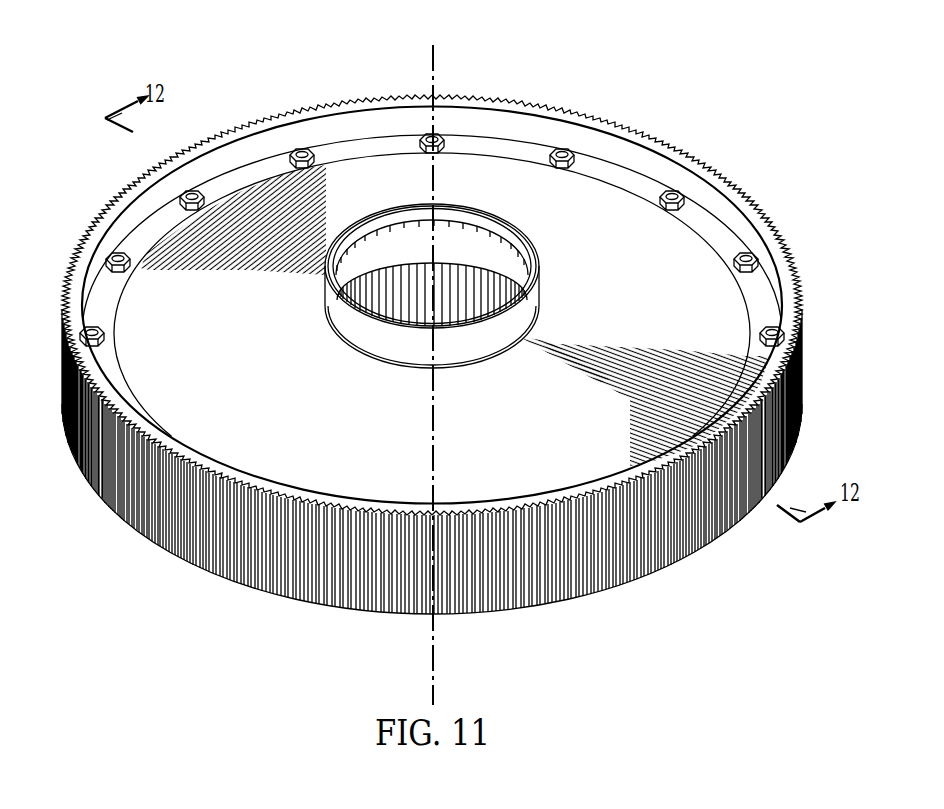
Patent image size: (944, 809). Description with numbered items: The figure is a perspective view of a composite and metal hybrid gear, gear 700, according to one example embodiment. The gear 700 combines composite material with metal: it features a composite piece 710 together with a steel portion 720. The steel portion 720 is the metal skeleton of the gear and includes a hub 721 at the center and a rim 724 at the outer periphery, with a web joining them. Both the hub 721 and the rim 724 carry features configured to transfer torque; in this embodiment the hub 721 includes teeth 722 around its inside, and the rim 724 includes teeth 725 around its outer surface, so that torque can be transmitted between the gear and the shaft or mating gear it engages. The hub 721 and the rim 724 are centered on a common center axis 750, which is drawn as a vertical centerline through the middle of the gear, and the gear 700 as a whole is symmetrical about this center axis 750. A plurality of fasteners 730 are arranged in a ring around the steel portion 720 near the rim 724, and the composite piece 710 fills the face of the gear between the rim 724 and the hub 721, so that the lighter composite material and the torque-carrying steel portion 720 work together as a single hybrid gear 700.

The gear 700 is at (670, 122).
The composite piece 710 is at (250, 358).
The steel portion 720 is at (226, 156).
The hub 721 is at (478, 262).
The teeth 722 is at (420, 308).
The rim 724 is at (294, 112).
The teeth 725 is at (222, 568).
The fasteners 730 is at (658, 196).
The center axis 750 is at (431, 60).